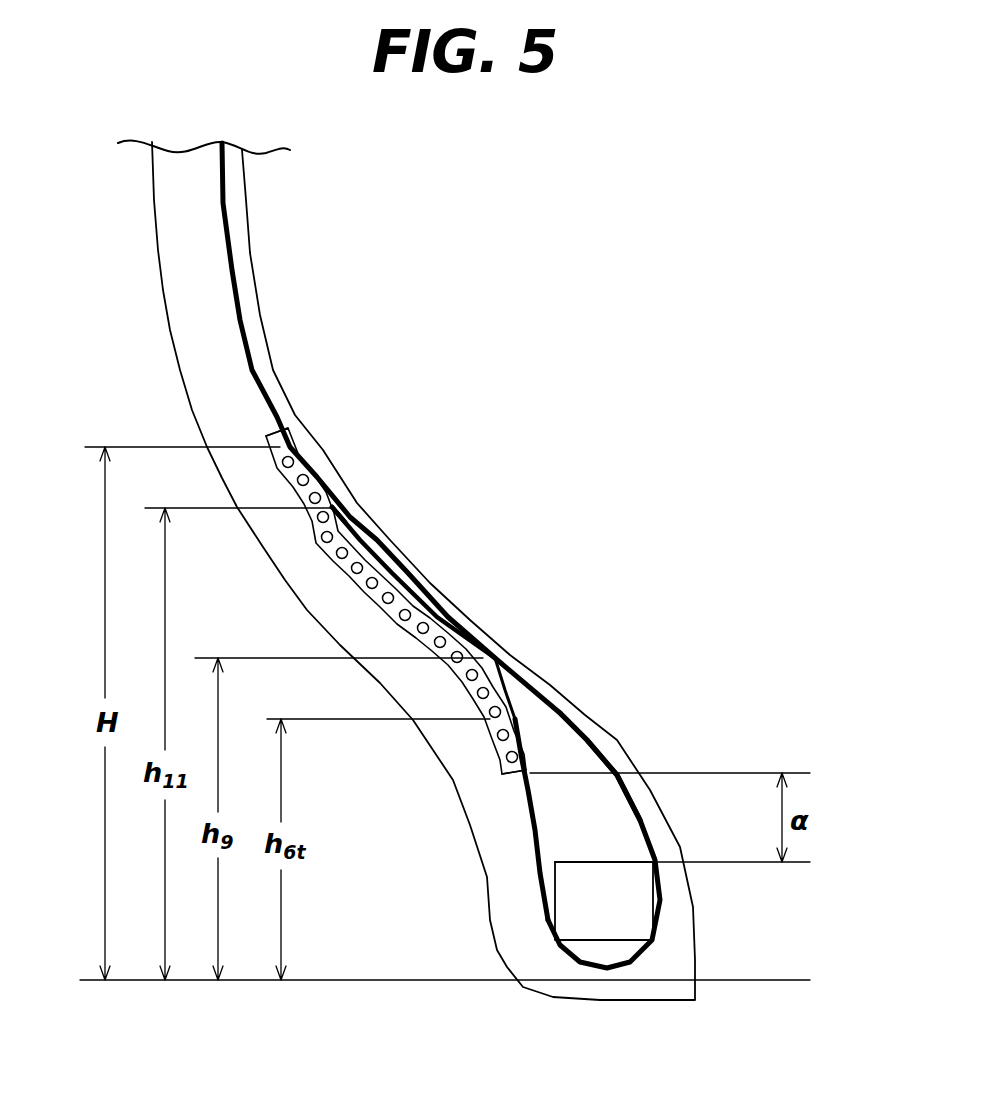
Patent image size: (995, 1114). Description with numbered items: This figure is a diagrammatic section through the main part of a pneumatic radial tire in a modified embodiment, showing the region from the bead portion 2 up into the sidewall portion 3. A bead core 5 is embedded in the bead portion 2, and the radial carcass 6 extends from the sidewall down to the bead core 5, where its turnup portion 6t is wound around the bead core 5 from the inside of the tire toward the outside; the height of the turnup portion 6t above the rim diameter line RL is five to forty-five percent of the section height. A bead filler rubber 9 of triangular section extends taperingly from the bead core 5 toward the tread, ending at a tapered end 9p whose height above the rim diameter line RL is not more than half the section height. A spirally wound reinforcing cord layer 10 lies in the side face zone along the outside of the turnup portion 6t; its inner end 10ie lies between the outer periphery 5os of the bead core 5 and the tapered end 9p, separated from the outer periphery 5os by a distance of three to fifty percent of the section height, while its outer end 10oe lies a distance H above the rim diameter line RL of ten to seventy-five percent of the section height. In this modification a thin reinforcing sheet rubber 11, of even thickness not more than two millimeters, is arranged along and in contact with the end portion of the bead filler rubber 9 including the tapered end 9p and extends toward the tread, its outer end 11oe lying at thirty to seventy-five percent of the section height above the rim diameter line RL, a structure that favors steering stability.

The bead portion 2 is at (438, 782).
The sidewall portion 3 is at (151, 330).
The bead core 5 is at (607, 912).
The outer periphery of the bead core 5os is at (587, 862).
The radial carcass 6 is at (243, 332).
The turnup portion 6t is at (540, 865).
The bead filler rubber 9 is at (590, 807).
The tapered end of the bead filler rubber 9p is at (497, 659).
The reinforcing cord layer 10 is at (352, 578).
The outer end of the reinforcing cord layer 10oe is at (288, 424).
The inner end of the reinforcing cord layer 10ie is at (518, 776).
The reinforcing sheet rubber 11 is at (400, 563).
The outer end of the reinforcing sheet rubber 11oe is at (335, 506).
The rim diameter line RL is at (412, 980).